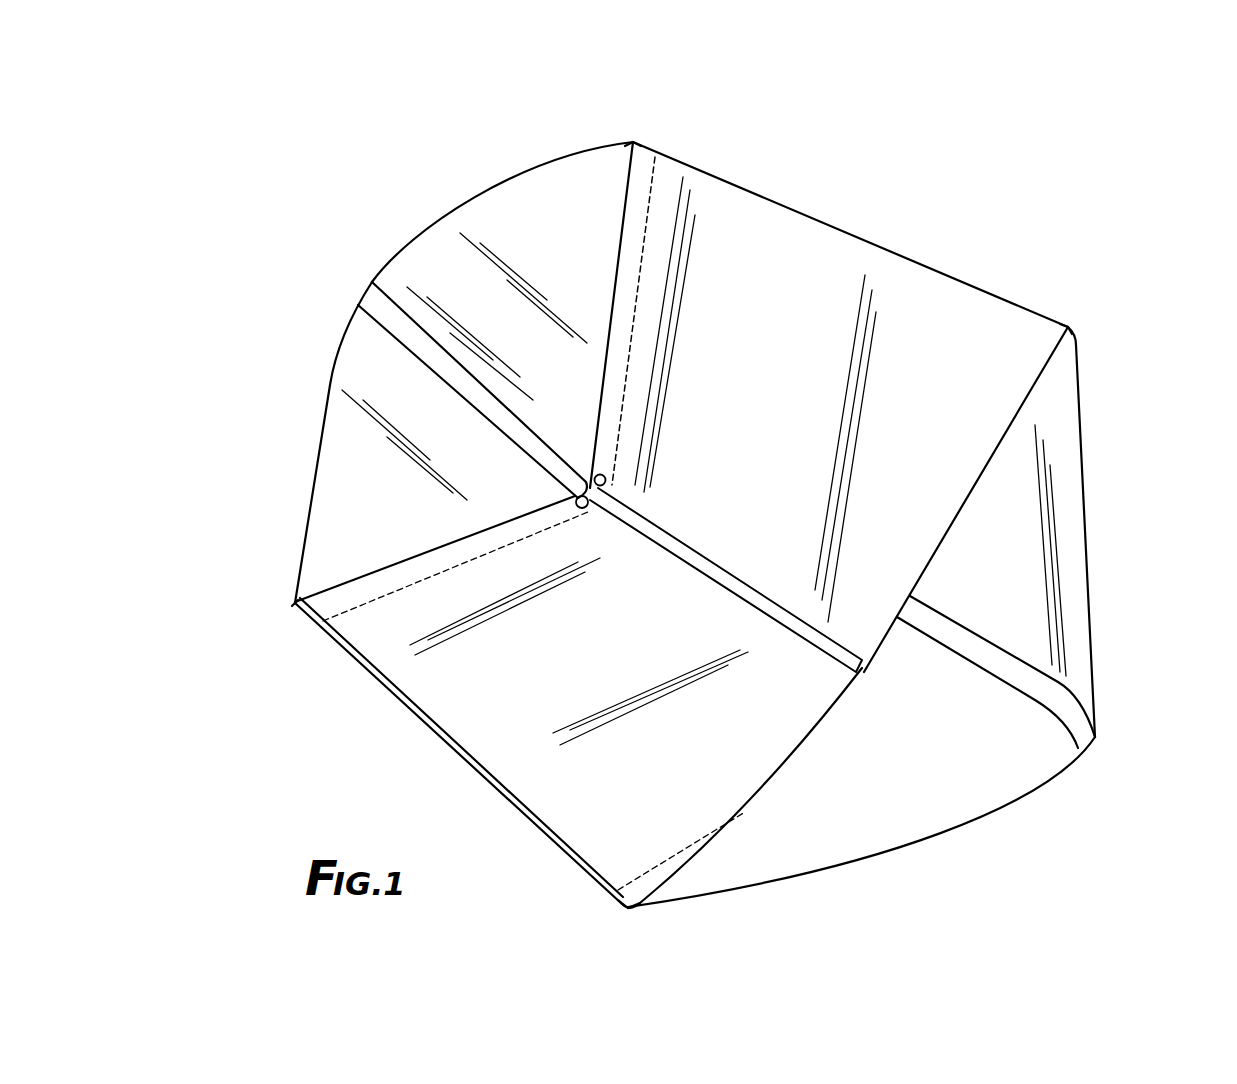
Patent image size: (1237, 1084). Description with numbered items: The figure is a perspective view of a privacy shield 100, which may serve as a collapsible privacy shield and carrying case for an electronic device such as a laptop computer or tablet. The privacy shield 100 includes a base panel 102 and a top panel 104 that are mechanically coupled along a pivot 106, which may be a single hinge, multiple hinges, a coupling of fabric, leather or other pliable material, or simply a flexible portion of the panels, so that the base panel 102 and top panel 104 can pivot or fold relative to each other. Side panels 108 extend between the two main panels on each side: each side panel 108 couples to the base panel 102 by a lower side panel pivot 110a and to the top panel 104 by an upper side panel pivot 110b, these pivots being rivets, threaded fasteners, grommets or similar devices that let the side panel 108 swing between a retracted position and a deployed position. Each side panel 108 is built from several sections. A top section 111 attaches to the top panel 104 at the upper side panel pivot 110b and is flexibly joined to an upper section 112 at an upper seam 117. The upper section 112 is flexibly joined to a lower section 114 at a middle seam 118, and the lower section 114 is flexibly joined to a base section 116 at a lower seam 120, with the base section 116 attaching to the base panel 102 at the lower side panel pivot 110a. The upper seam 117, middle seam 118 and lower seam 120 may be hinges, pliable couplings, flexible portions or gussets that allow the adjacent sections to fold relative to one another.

The privacy shield 100 is at (318, 156).
The base panel 102 is at (468, 722).
The top panel 104 is at (926, 297).
The pivot 106 is at (690, 553).
The side panel 108 is at (332, 381).
The lower side panel pivot 110a is at (576, 497).
The upper side panel pivot 110b is at (600, 474).
The top section 111 is at (648, 170).
The upper section 112 is at (524, 204).
The lower section 114 is at (347, 462).
The base section 116 is at (296, 606).
The upper seam 117 is at (623, 178).
The middle seam 118 is at (372, 298).
The lower seam 120 is at (342, 583).